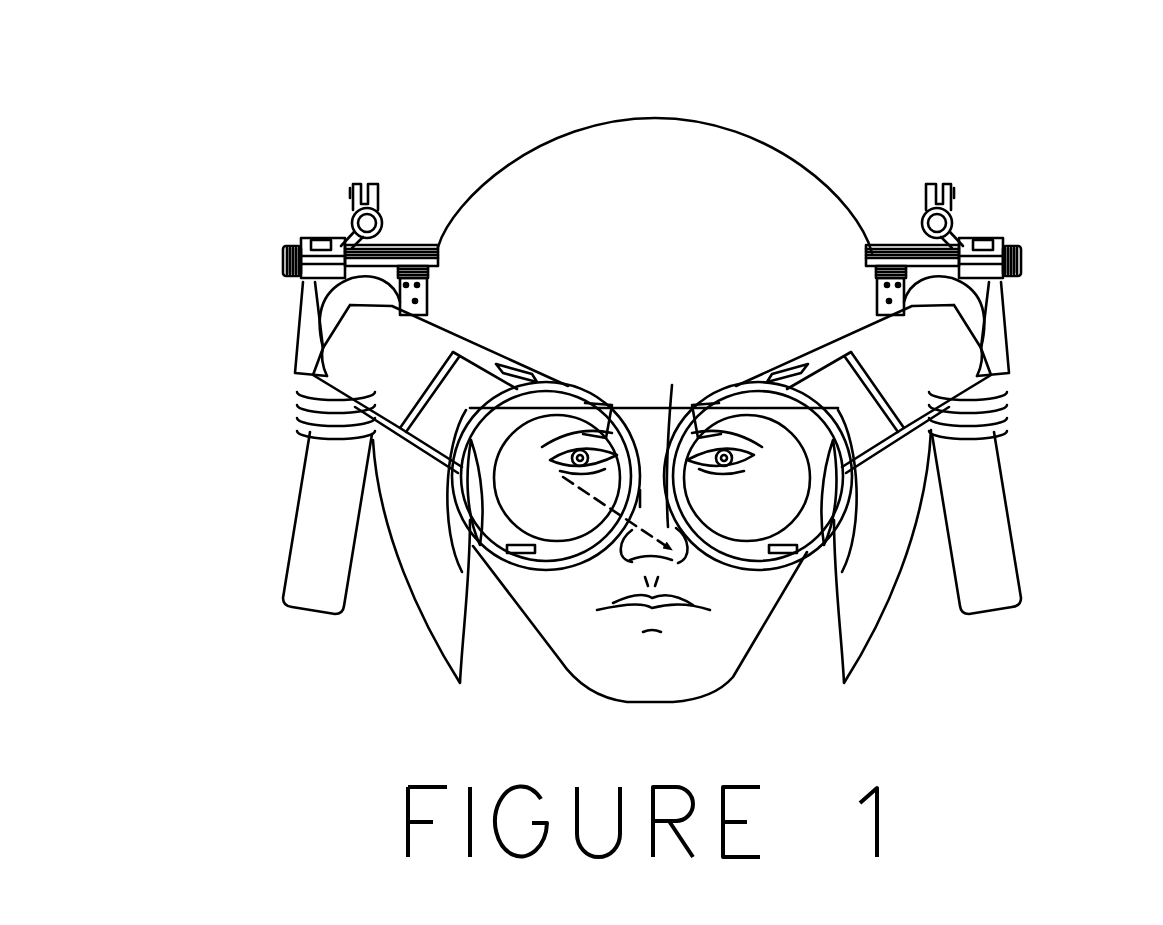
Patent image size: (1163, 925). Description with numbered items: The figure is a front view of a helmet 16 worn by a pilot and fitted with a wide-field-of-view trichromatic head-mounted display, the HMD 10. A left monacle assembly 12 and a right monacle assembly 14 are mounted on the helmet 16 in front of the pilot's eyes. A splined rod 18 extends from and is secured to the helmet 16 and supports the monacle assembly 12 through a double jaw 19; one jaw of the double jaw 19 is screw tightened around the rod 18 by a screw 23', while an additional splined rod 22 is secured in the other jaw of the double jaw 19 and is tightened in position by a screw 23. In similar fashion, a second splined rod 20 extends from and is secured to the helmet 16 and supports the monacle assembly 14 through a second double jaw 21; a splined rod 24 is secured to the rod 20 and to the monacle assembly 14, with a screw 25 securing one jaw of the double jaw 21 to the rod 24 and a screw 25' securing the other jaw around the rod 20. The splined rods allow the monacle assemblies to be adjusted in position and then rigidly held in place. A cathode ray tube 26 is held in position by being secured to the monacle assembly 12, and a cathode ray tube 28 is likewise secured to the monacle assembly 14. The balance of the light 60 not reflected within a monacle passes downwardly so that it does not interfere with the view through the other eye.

The WFOV trichromatic HMD 10 is at (395, 90).
The left monacle assembly 12 is at (1005, 330).
The right monacle assembly 14 is at (303, 318).
The helmet 16 is at (752, 130).
The splined rod 18 is at (1017, 280).
The double jaw 19 is at (960, 240).
The second splined rod 20 is at (293, 278).
The second double jaw 21 is at (345, 238).
The splined rod 22 is at (953, 228).
The screw 23 is at (946, 178).
The screw 23' is at (1000, 273).
The splined rod 24 is at (352, 237).
The screw 25 is at (368, 159).
The screw 25' is at (325, 269).
The cathode ray tube 26 is at (1010, 507).
The cathode ray tube 28 is at (288, 478).
The balance of the light 60 is at (567, 487).